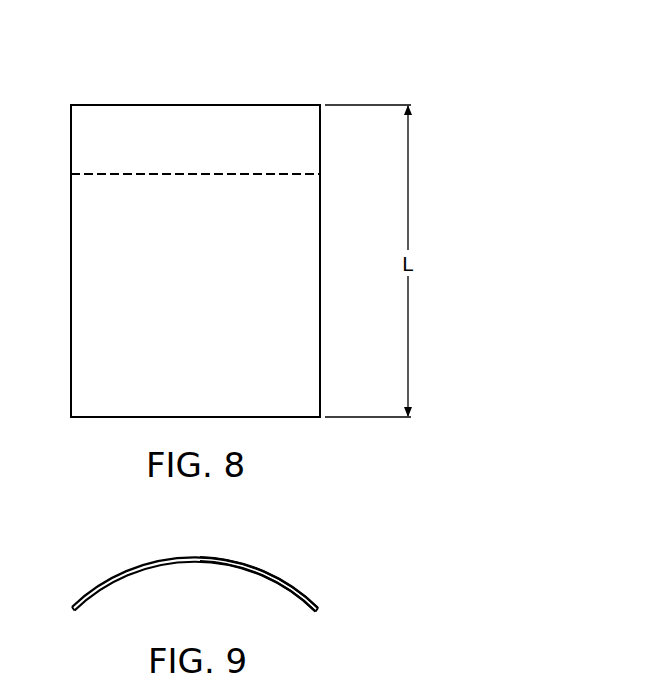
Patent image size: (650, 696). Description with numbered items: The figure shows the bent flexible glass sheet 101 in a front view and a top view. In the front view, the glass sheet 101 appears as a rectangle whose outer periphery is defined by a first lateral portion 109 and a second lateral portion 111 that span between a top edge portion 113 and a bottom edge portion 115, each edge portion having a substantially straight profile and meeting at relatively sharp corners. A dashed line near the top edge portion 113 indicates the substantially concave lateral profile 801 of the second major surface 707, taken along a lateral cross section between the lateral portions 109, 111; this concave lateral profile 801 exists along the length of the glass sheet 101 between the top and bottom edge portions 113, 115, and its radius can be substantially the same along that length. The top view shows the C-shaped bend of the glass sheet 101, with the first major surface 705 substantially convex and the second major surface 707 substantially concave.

In FIG. 8, the flexible glass sheet 101 is at (280, 92).
In FIG. 9, the flexible glass sheet 101 is at (118, 598).
In FIG. 8, the top edge portion 113 is at (110, 105).
In FIG. 8, the first lateral portion 109 is at (71, 273).
In FIG. 8, the second lateral portion 111 is at (321, 275).
In FIG. 8, the bottom edge portion 115 is at (100, 418).
In FIG. 8, the concave lateral profile 801 is at (149, 175).
In FIG. 8, the second major surface 707 is at (194, 283).
In FIG. 9, the second major surface 707 is at (288, 598).
In FIG. 9, the first major surface 705 is at (271, 568).